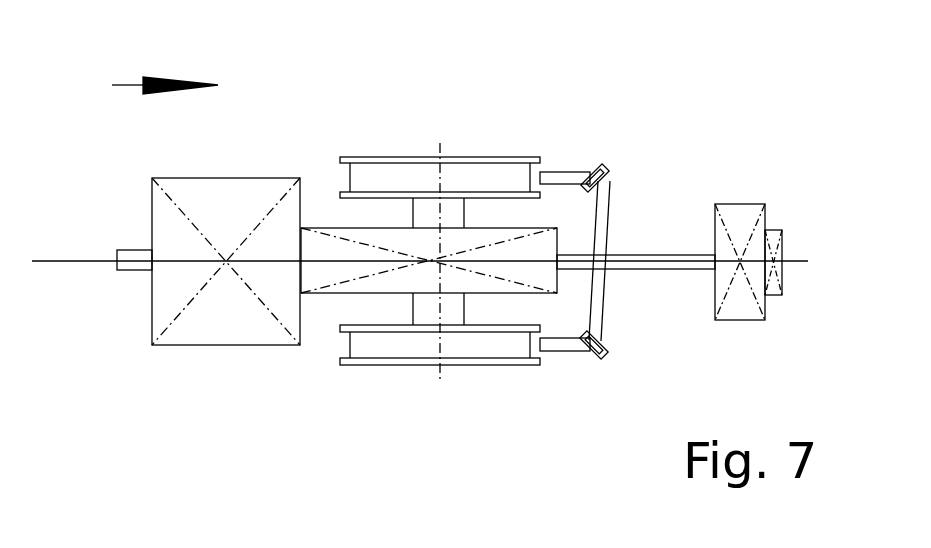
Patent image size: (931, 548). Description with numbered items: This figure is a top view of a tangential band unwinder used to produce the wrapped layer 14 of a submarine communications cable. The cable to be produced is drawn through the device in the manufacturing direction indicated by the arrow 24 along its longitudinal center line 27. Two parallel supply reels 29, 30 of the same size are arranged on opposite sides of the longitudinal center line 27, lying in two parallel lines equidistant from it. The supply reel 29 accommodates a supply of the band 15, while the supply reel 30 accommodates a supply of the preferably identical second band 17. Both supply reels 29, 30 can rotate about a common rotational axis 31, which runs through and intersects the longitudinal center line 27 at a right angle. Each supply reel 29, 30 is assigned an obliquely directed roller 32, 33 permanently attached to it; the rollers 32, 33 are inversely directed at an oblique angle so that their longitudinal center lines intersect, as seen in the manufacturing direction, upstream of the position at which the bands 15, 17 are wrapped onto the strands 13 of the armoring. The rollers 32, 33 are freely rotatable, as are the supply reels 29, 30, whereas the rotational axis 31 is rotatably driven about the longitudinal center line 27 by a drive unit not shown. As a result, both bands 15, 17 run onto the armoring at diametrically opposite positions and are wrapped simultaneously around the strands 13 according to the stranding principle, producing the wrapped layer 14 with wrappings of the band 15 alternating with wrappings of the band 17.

The strands 13 is at (589, 256).
The wrapped layer 14 is at (674, 256).
The band 15 is at (556, 176).
The second band 17 is at (634, 260).
The arrow 24 is at (130, 84).
The longitudinal center line 27 is at (52, 259).
The supply reel 29 is at (398, 159).
The supply reel 30 is at (383, 366).
The rotational axis 31 is at (441, 152).
The roller 32 is at (601, 166).
The roller 33 is at (603, 358).